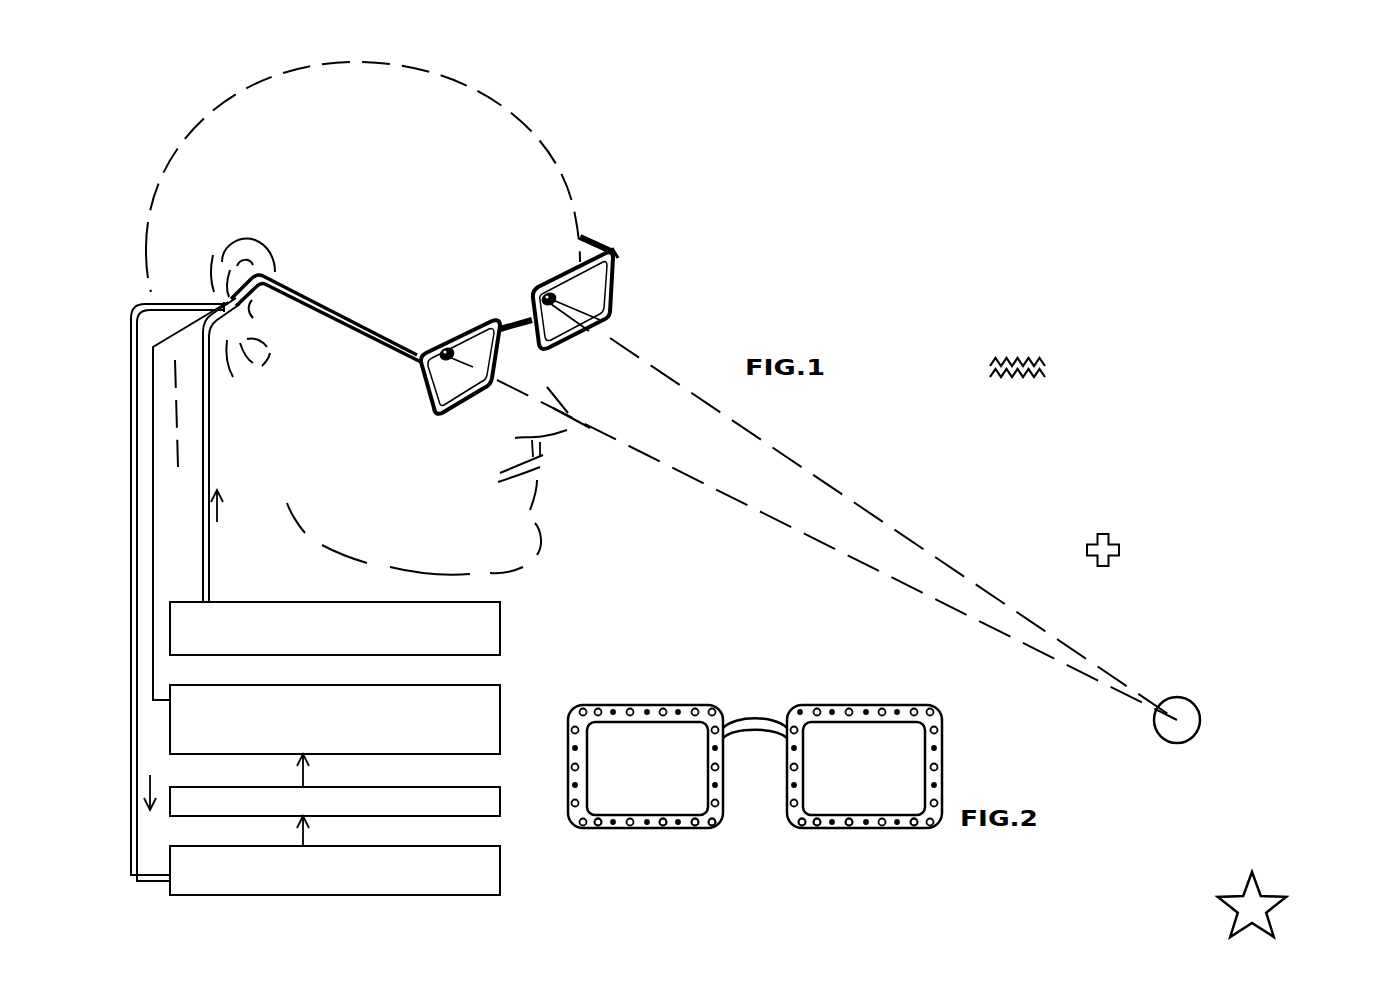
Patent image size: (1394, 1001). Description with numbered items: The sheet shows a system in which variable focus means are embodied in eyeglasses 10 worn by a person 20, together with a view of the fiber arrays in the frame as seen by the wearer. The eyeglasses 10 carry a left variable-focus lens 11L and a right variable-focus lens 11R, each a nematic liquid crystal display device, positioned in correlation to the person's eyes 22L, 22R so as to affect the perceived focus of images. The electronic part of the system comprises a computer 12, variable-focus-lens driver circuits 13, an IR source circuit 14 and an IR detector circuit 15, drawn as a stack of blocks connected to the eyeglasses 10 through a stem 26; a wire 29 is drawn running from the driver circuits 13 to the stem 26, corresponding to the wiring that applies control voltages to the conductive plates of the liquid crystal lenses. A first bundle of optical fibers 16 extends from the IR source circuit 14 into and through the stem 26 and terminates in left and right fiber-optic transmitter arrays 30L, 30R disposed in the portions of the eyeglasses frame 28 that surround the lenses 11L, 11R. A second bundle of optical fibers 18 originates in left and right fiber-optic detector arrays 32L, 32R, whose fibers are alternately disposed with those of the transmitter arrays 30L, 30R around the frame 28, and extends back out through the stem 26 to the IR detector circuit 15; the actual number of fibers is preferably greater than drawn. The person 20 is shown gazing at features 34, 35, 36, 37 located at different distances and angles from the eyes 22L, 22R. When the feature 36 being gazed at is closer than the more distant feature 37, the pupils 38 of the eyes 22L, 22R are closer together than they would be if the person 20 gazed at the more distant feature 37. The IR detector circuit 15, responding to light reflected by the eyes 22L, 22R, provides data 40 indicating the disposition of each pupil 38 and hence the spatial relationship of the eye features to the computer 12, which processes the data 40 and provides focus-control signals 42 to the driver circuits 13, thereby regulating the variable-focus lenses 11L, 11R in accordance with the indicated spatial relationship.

In FIG. 1, the eyeglasses 10 is at (594, 232).
In FIG. 1, the left variable-focus lens 11L is at (611, 320).
In FIG. 2, the left variable-focus lens 11L is at (688, 730).
In FIG. 1, the right variable-focus lens 11R is at (420, 417).
In FIG. 2, the right variable-focus lens 11R is at (912, 725).
In FIG. 1, the computer 12 is at (430, 787).
In FIG. 1, the variable-focus-lens driver circuits 13 is at (415, 685).
In FIG. 1, the IR source circuit 14 is at (310, 602).
In FIG. 1, the IR detector circuit 15 is at (435, 846).
In FIG. 1, the first bundle of optical fibers 16 is at (210, 540).
In FIG. 1, the second bundle of optical fibers 18 is at (131, 648).
In FIG. 1, the person 20 is at (515, 108).
In FIG. 1, the left eye 22L is at (563, 268).
In FIG. 1, the right eye 22R is at (434, 347).
In FIG. 1, the stem 26 is at (347, 331).
In FIG. 1, the eyeglasses frame 28 is at (533, 285).
In FIG. 2, the eyeglasses frame 28 is at (640, 705).
In FIG. 1, the lens driver wire 29 is at (155, 508).
In FIG. 2, the left fiber-optic transmitter array 30L is at (717, 828).
In FIG. 2, the right fiber-optic transmitter array 30R is at (833, 828).
In FIG. 2, the left fiber-optic detector array 32L is at (663, 828).
In FIG. 2, the right fiber-optic detector array 32R is at (920, 828).
In FIG. 1, the feature 34 is at (1052, 368).
In FIG. 1, the feature 35 is at (1120, 546).
In FIG. 1, the feature 36 is at (1199, 708).
In FIG. 1, the more distant feature 37 is at (1283, 898).
In FIG. 1, the pupil 38 is at (455, 345).
In FIG. 1, the data 40 is at (306, 845).
In FIG. 1, the focus-control signals 42 is at (306, 783).